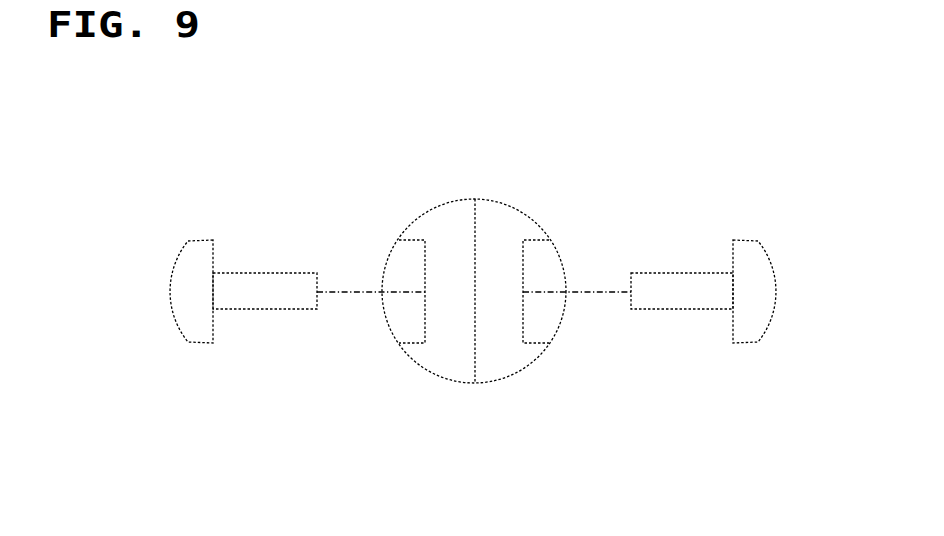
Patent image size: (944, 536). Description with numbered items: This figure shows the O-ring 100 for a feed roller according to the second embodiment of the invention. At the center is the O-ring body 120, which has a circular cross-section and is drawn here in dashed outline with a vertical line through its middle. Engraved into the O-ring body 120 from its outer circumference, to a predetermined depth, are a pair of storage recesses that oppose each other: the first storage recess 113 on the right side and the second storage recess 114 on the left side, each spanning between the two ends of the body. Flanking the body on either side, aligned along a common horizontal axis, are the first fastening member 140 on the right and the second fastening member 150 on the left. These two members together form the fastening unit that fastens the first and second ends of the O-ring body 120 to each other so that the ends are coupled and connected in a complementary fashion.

The O-ring 100 is at (640, 216).
The O-ring body 120 is at (497, 193).
The second storage recess 114 is at (417, 325).
The first storage recess 113 is at (530, 325).
The second fastening member 150 is at (155, 293).
The first fastening member 140 is at (795, 293).